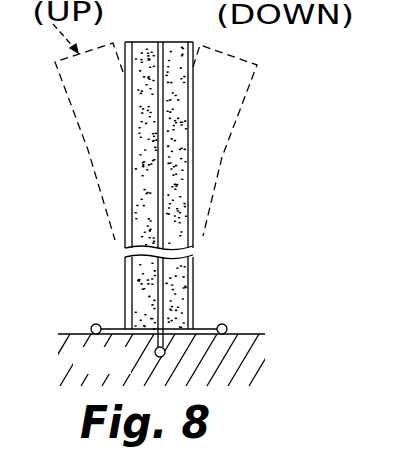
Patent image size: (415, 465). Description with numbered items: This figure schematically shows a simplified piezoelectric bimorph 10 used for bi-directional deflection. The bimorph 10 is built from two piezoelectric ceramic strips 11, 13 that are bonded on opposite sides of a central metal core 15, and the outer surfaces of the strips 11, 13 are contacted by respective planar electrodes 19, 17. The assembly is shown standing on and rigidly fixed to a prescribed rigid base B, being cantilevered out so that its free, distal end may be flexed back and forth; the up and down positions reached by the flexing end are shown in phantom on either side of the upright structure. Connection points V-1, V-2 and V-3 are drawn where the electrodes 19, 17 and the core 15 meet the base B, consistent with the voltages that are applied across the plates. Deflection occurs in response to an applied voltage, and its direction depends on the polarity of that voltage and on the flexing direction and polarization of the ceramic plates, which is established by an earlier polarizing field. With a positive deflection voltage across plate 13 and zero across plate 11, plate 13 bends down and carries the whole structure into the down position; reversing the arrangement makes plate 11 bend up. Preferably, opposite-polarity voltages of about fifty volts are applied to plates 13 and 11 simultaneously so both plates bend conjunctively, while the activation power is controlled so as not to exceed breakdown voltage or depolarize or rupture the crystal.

The bimorph 10 is at (301, 142).
The piezoelectric strip 11 is at (143, 270).
The piezoelectric strip 13 is at (174, 267).
The central metal core 15 is at (162, 150).
The planar electrode 17 is at (190, 213).
The planar electrode 19 is at (125, 190).
The first pivot point V-1 is at (91, 324).
The second pivot point V-2 is at (156, 352).
The third pivot point V-3 is at (223, 324).
The rigid base B is at (250, 357).